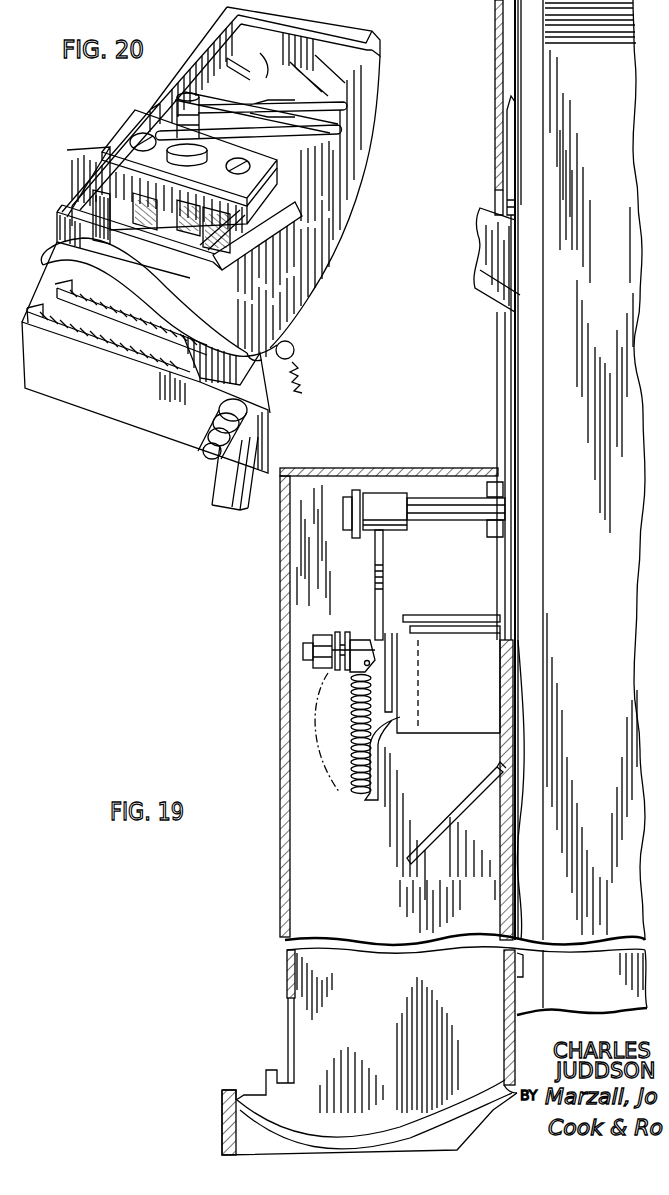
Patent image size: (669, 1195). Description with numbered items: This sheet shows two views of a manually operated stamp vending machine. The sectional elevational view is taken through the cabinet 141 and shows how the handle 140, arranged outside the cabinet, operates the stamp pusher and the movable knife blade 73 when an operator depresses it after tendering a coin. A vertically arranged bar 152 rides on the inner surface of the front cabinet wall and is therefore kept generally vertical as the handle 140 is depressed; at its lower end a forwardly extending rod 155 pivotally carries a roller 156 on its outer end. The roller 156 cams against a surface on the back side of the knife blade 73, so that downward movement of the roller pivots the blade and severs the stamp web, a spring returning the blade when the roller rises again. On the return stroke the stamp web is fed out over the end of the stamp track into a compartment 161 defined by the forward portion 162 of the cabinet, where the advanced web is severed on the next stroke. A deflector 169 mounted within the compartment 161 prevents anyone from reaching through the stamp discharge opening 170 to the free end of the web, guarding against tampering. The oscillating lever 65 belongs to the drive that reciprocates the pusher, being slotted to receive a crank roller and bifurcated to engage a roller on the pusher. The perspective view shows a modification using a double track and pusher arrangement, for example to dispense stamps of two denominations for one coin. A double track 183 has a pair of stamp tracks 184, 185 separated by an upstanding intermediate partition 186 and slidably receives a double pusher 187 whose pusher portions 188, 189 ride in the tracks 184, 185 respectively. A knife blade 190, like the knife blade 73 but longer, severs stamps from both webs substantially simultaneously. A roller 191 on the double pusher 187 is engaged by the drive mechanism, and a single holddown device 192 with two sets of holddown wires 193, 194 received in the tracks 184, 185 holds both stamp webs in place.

In FIG. 20, the oscillating lever 65 is at (342, 130).
In FIG. 19, the movable knife blade 73 is at (375, 575).
In FIG. 19, the handle 140 is at (490, 297).
In FIG. 19, the cabinet 141 is at (495, 96).
In FIG. 19, the vertically arranged bar 152 is at (510, 140).
In FIG. 19, the forwardly extending rod 155 is at (450, 497).
In FIG. 19, the roller 156 is at (388, 492).
In FIG. 19, the compartment 161 is at (302, 672).
In FIG. 19, the forward portion of the cabinet 162 is at (283, 548).
In FIG. 19, the deflector 169 is at (443, 830).
In FIG. 19, the stamp discharge opening 170 is at (287, 1025).
In FIG. 20, the double track 183 is at (50, 203).
In FIG. 20, the stamp track 184 is at (153, 358).
In FIG. 20, the stamp track 185 is at (77, 325).
In FIG. 20, the upstanding intermediate partition 186 is at (110, 342).
In FIG. 20, the double pusher 187 is at (265, 172).
In FIG. 20, the pusher portion 188 is at (237, 207).
In FIG. 20, the pusher portion 189 is at (112, 165).
In FIG. 20, the knife blade 190 is at (100, 296).
In FIG. 20, the roller 191 is at (182, 100).
In FIG. 20, the holddown device 192 is at (330, 19).
In FIG. 20, the holddown wires 193 is at (212, 281).
In FIG. 20, the holddown wires 194 is at (156, 246).